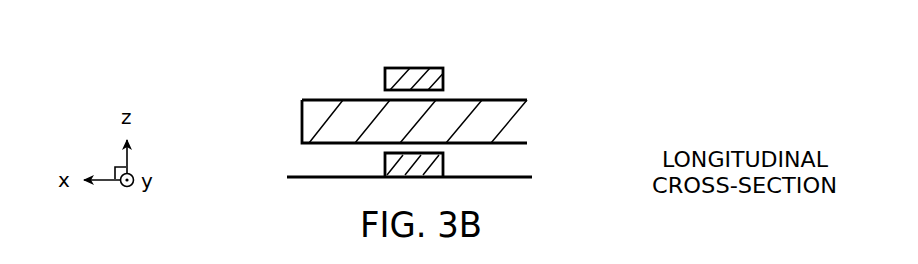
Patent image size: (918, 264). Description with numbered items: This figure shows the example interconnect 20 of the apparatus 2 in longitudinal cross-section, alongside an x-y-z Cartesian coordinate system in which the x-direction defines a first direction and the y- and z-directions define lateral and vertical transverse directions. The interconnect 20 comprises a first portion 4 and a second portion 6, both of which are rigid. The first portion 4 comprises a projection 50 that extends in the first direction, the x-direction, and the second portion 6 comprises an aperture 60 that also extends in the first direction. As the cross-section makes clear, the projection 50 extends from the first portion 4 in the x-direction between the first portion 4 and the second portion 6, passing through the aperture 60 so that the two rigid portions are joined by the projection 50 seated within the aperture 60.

The apparatus 2 is at (267, 77).
The first portion 4 is at (517, 100).
The second portion 6 is at (400, 67).
The interconnect 20 is at (597, 73).
The projection 50 is at (322, 99).
The aperture 60 is at (386, 153).